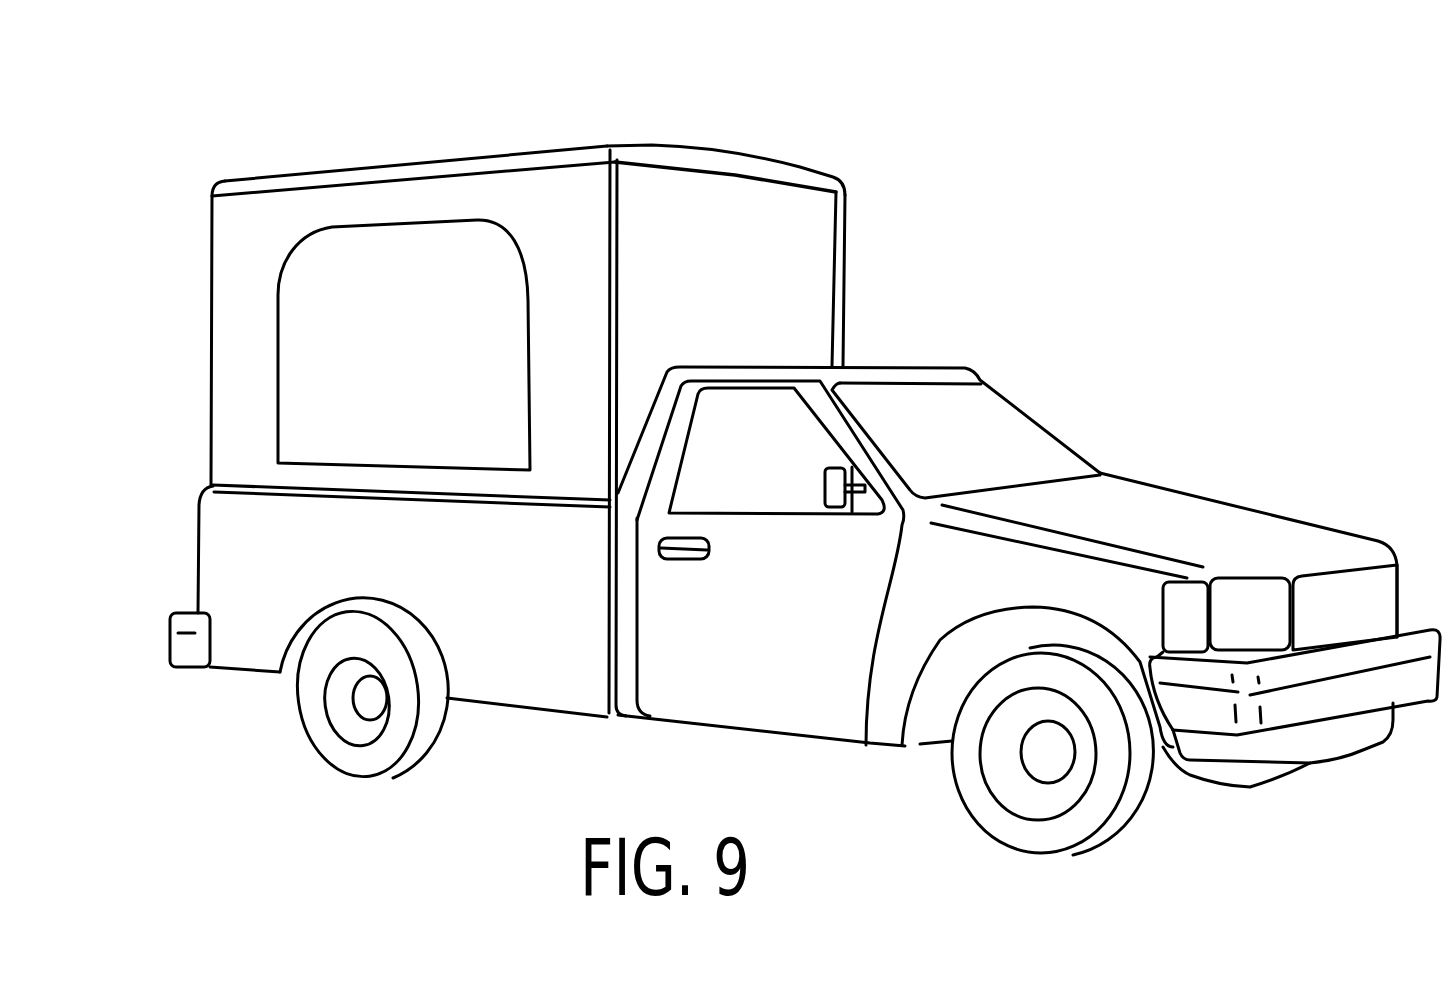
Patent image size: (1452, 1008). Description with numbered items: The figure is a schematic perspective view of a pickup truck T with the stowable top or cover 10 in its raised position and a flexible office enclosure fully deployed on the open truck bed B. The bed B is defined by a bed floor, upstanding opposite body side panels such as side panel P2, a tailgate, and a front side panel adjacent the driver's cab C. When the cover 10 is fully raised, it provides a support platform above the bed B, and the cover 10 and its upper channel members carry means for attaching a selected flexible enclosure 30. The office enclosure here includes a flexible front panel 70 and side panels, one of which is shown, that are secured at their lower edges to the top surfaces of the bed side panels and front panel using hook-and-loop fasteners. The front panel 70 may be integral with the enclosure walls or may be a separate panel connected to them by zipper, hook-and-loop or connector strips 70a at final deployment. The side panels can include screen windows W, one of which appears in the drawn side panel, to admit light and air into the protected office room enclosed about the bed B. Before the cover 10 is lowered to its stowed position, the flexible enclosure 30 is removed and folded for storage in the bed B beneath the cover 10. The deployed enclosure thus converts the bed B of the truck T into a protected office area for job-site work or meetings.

The stowable top or cover 10 is at (531, 398).
The front flap or front panel 70 is at (730, 216).
The connector strips 70a is at (602, 195).
The flexible enclosure 30 is at (845, 273).
The screen windows W is at (425, 363).
The body side panel P2 is at (241, 510).
The truck bed B is at (380, 601).
The driver's cab C is at (945, 420).
The truck T is at (795, 596).